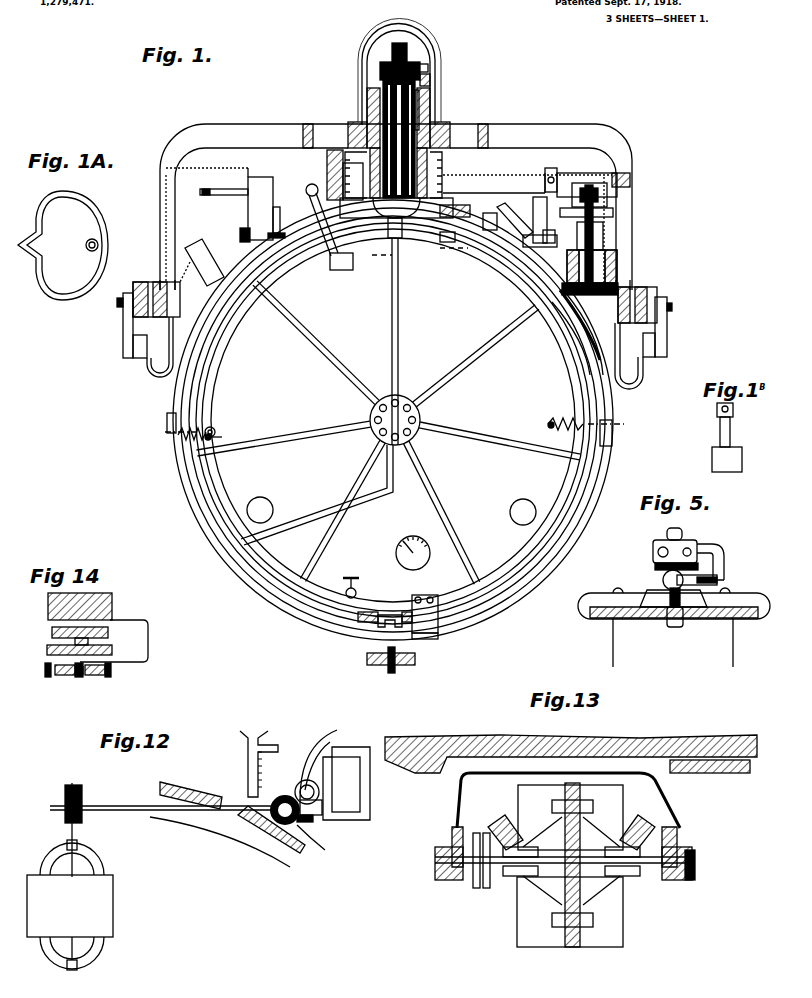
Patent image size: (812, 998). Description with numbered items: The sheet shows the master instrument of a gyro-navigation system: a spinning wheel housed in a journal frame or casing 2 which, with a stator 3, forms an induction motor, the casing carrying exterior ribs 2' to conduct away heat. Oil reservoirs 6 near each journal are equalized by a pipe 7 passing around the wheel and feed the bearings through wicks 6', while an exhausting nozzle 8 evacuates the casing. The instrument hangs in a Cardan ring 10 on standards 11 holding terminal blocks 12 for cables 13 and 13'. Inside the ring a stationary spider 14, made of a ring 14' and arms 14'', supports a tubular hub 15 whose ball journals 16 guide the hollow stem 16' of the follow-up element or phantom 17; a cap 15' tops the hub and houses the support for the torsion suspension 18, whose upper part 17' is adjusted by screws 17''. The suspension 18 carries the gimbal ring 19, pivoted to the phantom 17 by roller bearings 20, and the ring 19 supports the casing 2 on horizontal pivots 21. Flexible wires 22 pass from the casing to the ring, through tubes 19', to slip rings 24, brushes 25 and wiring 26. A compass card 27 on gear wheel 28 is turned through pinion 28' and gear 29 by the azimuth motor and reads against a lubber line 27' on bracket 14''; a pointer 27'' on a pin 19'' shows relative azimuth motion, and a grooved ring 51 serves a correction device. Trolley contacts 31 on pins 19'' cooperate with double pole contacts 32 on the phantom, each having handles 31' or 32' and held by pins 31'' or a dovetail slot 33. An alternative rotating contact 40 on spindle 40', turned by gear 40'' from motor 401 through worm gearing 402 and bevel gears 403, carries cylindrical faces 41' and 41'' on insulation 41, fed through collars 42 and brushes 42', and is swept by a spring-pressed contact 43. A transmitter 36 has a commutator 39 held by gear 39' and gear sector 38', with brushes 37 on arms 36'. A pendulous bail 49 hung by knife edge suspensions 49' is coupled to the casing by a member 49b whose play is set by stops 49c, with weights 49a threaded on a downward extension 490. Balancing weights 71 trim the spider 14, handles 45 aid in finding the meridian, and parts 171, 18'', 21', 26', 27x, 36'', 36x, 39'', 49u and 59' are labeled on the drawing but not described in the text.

In FIG. 1, the journal frame or casing 2 is at (284, 431).
In FIG. 1, the exterior ribs 2' is at (500, 435).
In FIG. 1, the stator 3 is at (250, 234).
In FIG. 1, the oil reservoir 6 is at (395, 420).
In FIG. 1, the absorbent wicks 6' is at (428, 562).
In FIG. 1, the pipe or duct 7 is at (362, 507).
In FIG. 1, the exhausting nozzle 8 is at (217, 434).
In FIG. 1, the Cardan ring 10 is at (657, 294).
In FIG. 1, the standards 11 is at (123, 345).
In FIG. 1, the electrical terminal blocks 12 is at (147, 347).
In FIG. 1, the conductor cable 13 is at (131, 358).
In FIG. 1, the conductor cable 13' is at (656, 360).
In FIG. 1, the relatively stationary part or spider 14 is at (191, 232).
In FIG. 1, the ring of spider 14' is at (659, 305).
In FIG. 1, the arms or bracket of spider 14'' is at (396, 207).
In FIG. 1, the tubular hub 15 is at (410, 162).
In FIG. 1, the cap 15' is at (388, 64).
In FIG. 1, the ball journals 16 is at (375, 143).
In FIG. 1, the central hollow stem 16' is at (444, 110).
In FIG. 1, the guiding and supporting element or phantom 17 is at (373, 400).
In FIG. 14, the guiding and supporting element or phantom 17 is at (98, 638).
In FIG. 1, the upper part of suspension support 17' is at (394, 105).
In FIG. 1, the screws 17'' is at (446, 60).
In FIG. 1, the packing 171 is at (433, 78).
In FIG. 1, the torsion suspension 18 is at (369, 74).
In FIG. 1, the bolt 18'' is at (409, 45).
In FIG. 1, the gimbal ring 19 is at (359, 420).
In FIG. 14, the gimbal ring 19 is at (111, 641).
In FIG. 12, the gimbal ring 19 is at (163, 791).
In FIG. 1, the tubes 19' is at (351, 261).
In FIG. 1, the pins 19'' is at (420, 249).
In FIG. 1A, the pins 19'' is at (117, 247).
In FIG. 5, the pins 19'' is at (647, 554).
In FIG. 1, the antifriction roller bearings 20 is at (407, 232).
In FIG. 1, the horizontal pivots 21 is at (385, 435).
In FIG. 1, the lever 21' is at (510, 216).
In FIG. 1, the electric wires 22 is at (260, 273).
In FIG. 1, the slip rings 24 is at (443, 170).
In FIG. 1, the brushes 25 is at (343, 173).
In FIG. 1, the wiring 26 is at (309, 174).
In FIG. 1, the block 26' is at (557, 189).
In FIG. 1, the compass card 27 is at (391, 175).
In FIG. 1, the lubber line 27' is at (636, 214).
In FIG. 1, the pointer 27'' is at (277, 194).
In FIG. 1A, the pipe section 27x is at (60, 300).
In FIG. 1, the gear-wheel 28 is at (214, 205).
In FIG. 1, the driving pinion 28' is at (432, 193).
In FIG. 1, the gear 29 is at (617, 215).
In FIG. 1, the wheel or trolley contact 31 is at (374, 207).
In FIG. 5, the wheel or trolley contact 31 is at (650, 555).
In FIG. 5, the handle 31' is at (697, 528).
In FIG. 5, the pins 31'' is at (726, 558).
In FIG. 1, the double pole contact 32 is at (392, 209).
In FIG. 5, the double pole contact 32 is at (669, 588).
In FIG. 5, the handle 32' is at (695, 626).
In FIG. 5, the dovetail slot 33 is at (585, 606).
In FIG. 1, the transmitter 36 is at (625, 282).
In FIG. 1, the arms 36' is at (460, 252).
In FIG. 1, the valve body 36'' is at (629, 266).
In FIG. 1, the valve body 36x is at (622, 260).
In FIG. 1, the brushes 37 is at (547, 272).
In FIG. 1, the gear sector 38' is at (620, 281).
In FIG. 1, the commutator 39 is at (563, 325).
In FIG. 1, the gear 39' is at (571, 333).
In FIG. 1, the pipe 39'' is at (560, 338).
In FIG. 1B, the rotating contact 40 is at (743, 425).
In FIG. 12, the rotating contact 40 is at (322, 769).
In FIG. 13, the rotating contact 40 is at (571, 807).
In FIG. 12, the spindle 40' is at (333, 795).
In FIG. 13, the spindle 40' is at (678, 881).
In FIG. 13, the gear 40'' is at (469, 875).
In FIG. 1, the insulation 41 is at (309, 215).
In FIG. 13, the insulation 41 is at (565, 865).
In FIG. 12, the cylindrical face 41' is at (319, 762).
In FIG. 13, the cylindrical face 41' is at (570, 879).
In FIG. 13, the cylindrical face 41'' is at (570, 925).
In FIG. 12, the collars 42 is at (346, 783).
In FIG. 13, the collars 42 is at (566, 865).
In FIG. 12, the brushes 42' is at (331, 817).
In FIG. 13, the brushes 42' is at (593, 819).
In FIG. 12, the cooperating contact 43 is at (270, 773).
In FIG. 1, the handles 45 is at (265, 500).
In FIG. 1, the pendulum 49 is at (420, 420).
In FIG. 1B, the pendulum 49 is at (740, 459).
In FIG. 14, the pendulum 49 is at (109, 682).
In FIG. 1, the knife edge suspensions 49' is at (642, 435).
In FIG. 14, the knife edge suspensions 49' is at (78, 687).
In FIG. 1, the adjustable weights 49a is at (370, 658).
In FIG. 1, the member 49b is at (398, 603).
In FIG. 14, the adjusting stops 49c is at (45, 670).
In FIG. 1, the plate 49u is at (437, 640).
In FIG. 14, the plate 49u is at (75, 677).
In FIG. 1, the grooved ring 51 is at (555, 236).
In FIG. 1, the stem 59' is at (629, 232).
In FIG. 1, the balancing weights 71 is at (207, 265).
In FIG. 12, the motor 401 is at (70, 905).
In FIG. 12, the worm and worm wheel 402 is at (65, 819).
In FIG. 12, the bevel gears 403 is at (324, 844).
In FIG. 1, the downward extension 490 is at (387, 673).